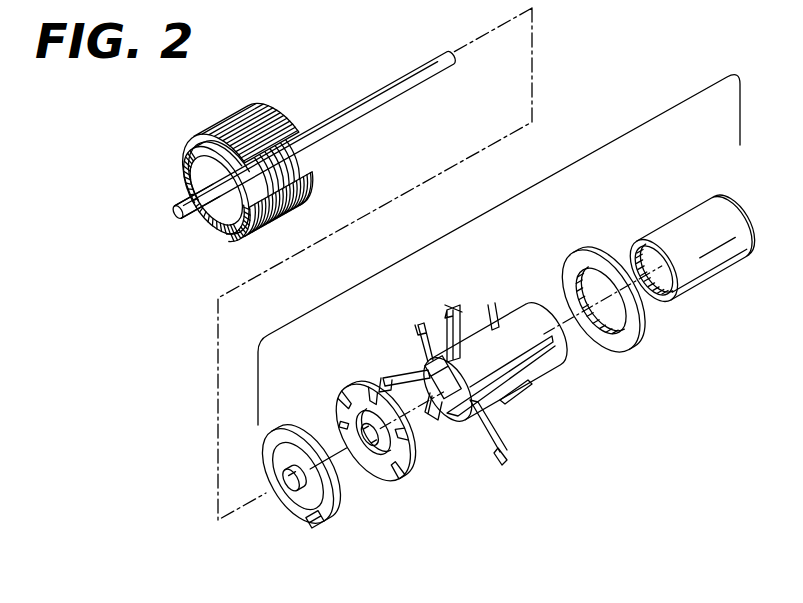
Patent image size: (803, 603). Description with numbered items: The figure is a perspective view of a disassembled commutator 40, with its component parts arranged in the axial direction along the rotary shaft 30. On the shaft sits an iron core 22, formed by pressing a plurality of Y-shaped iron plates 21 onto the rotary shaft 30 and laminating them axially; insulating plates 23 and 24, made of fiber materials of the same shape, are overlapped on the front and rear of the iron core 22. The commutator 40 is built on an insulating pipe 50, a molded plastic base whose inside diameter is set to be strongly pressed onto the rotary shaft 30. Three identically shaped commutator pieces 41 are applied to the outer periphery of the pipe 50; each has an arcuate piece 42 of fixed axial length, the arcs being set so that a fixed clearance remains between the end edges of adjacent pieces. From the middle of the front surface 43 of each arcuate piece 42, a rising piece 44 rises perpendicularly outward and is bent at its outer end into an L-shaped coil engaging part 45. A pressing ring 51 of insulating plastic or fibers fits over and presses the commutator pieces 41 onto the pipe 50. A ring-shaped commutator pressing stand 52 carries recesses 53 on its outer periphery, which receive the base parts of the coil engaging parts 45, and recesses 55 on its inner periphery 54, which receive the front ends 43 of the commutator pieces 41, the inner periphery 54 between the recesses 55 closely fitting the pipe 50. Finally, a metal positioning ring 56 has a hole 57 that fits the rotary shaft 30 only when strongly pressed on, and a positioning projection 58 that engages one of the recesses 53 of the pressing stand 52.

The Y-shaped iron plates 21 is at (233, 110).
The iron core 22 is at (243, 98).
The insulating plate 23 is at (178, 182).
The insulating plate 24 is at (280, 117).
The rotary shaft 30 is at (374, 96).
The commutator 40 is at (479, 212).
The commutator pieces 41 is at (492, 305).
The arcuate piece 42 is at (517, 317).
The front surface 43 is at (446, 310).
The rising piece 44 is at (466, 305).
The coil engaging part 45 is at (421, 325).
The insulating pipe 50 is at (677, 223).
The pressing ring 51 is at (624, 338).
The commutator pressing stand 52 is at (391, 482).
The recesses 53 is at (402, 468).
The inner periphery 54 is at (372, 457).
The recesses 55 is at (343, 423).
The positioning ring 56 is at (287, 422).
The hole 57 is at (290, 484).
The positioning projection 58 is at (312, 518).